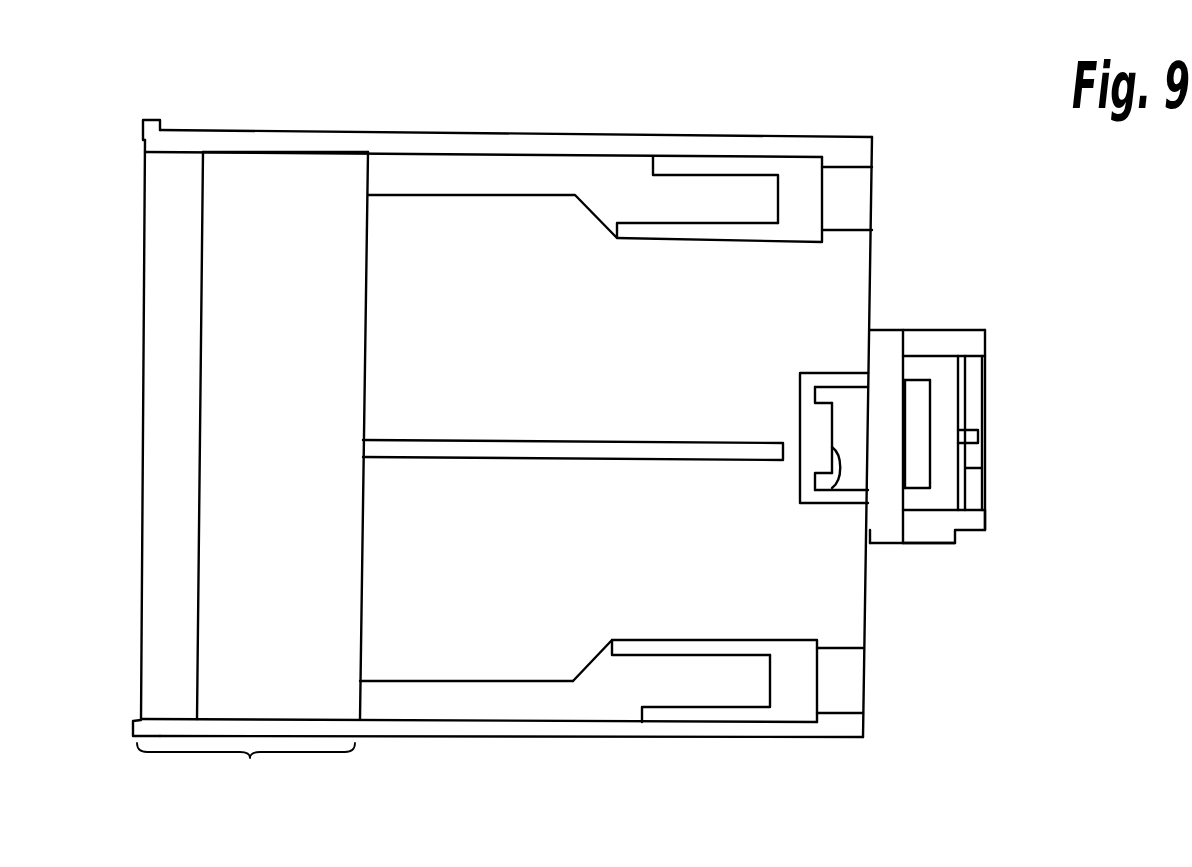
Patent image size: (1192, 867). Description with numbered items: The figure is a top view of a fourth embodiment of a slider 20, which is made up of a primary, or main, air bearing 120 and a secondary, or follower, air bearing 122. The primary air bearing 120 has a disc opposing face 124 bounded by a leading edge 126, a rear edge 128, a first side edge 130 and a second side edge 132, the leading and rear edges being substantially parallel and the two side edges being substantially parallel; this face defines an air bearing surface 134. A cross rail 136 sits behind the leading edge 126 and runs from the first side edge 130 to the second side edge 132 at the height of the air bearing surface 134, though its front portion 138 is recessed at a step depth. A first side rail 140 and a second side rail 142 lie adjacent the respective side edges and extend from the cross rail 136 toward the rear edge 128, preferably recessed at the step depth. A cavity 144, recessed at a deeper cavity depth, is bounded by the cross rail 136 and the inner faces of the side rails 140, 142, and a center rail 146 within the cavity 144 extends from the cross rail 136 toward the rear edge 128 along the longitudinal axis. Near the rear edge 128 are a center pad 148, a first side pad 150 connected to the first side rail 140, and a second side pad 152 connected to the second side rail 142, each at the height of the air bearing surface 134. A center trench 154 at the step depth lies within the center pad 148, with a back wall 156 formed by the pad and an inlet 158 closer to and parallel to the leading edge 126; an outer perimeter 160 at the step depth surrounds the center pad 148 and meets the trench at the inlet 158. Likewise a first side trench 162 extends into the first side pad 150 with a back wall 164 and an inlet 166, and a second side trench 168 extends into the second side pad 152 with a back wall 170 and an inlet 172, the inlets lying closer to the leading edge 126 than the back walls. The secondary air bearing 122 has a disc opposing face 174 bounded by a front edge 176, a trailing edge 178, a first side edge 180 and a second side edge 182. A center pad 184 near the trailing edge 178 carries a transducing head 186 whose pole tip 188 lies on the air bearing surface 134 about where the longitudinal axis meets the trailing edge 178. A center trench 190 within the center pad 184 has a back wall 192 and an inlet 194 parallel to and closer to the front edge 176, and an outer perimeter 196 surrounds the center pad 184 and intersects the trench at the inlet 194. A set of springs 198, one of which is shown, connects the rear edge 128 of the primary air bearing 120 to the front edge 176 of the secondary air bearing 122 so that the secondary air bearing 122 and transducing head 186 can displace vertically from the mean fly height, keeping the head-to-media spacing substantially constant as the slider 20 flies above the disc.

The slider 20 is at (818, 108).
The primary air bearing 120 is at (452, 233).
The secondary air bearing 122 is at (914, 557).
The disc opposing face 124 is at (303, 690).
The leading edge 126 is at (142, 547).
The rear edge 128 is at (870, 288).
The first side edge 130 is at (370, 132).
The second side edge 132 is at (470, 740).
The air bearing surface 134 is at (248, 175).
The cross rail 136 is at (246, 772).
The front portion 138 is at (167, 342).
The first side rail 140 is at (445, 170).
The second side rail 142 is at (520, 722).
The cavity 144 is at (430, 660).
The center rail 146 is at (415, 455).
The center pad 148 is at (852, 412).
The first side pad 150 is at (798, 192).
The second side pad 152 is at (800, 680).
The center trench 154 is at (822, 440).
The back wall 156 is at (833, 492).
The inlet 158 is at (812, 423).
The outer perimeter 160 is at (830, 373).
The first side trench 162 is at (687, 197).
The back wall 164 is at (785, 180).
The inlet 166 is at (638, 200).
The second side trench 168 is at (707, 683).
The back wall 170 is at (772, 690).
The inlet 172 is at (632, 682).
The disc opposing face 174 is at (947, 376).
The front edge 176 is at (903, 395).
The trailing edge 178 is at (987, 487).
The first side edge 180 is at (937, 328).
The second side edge 182 is at (926, 548).
The center pad 184 is at (943, 420).
The transducing head 186 is at (965, 468).
The pole tip 188 is at (978, 443).
The center trench 190 is at (887, 440).
The back wall 192 is at (932, 398).
The inlet 194 is at (910, 432).
The outer perimeter 196 is at (968, 340).
The springs 198 is at (880, 490).